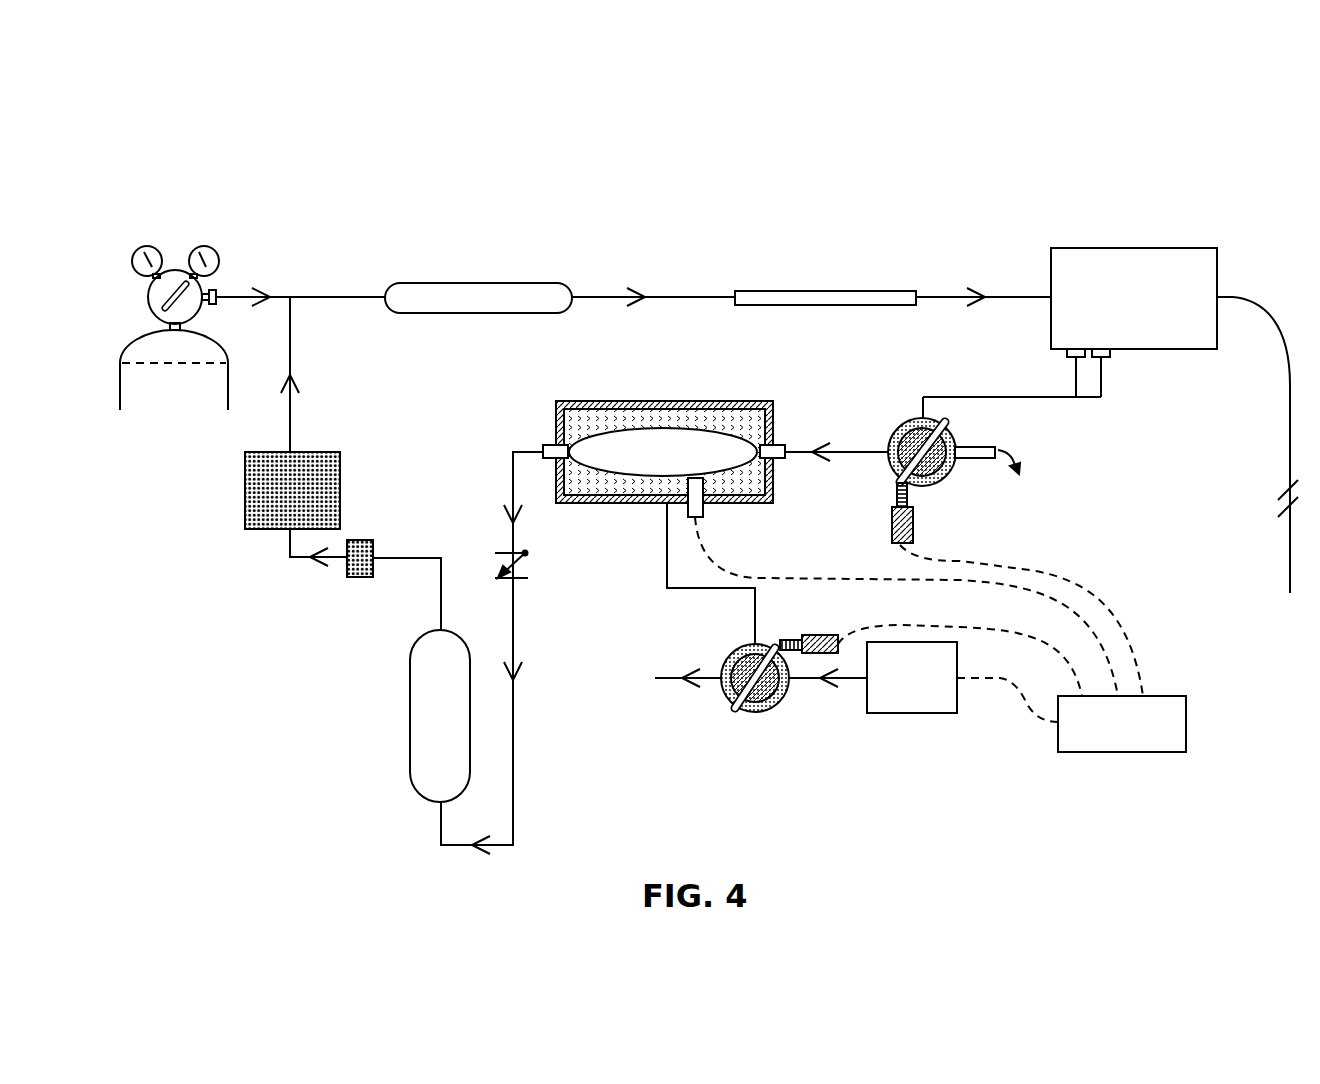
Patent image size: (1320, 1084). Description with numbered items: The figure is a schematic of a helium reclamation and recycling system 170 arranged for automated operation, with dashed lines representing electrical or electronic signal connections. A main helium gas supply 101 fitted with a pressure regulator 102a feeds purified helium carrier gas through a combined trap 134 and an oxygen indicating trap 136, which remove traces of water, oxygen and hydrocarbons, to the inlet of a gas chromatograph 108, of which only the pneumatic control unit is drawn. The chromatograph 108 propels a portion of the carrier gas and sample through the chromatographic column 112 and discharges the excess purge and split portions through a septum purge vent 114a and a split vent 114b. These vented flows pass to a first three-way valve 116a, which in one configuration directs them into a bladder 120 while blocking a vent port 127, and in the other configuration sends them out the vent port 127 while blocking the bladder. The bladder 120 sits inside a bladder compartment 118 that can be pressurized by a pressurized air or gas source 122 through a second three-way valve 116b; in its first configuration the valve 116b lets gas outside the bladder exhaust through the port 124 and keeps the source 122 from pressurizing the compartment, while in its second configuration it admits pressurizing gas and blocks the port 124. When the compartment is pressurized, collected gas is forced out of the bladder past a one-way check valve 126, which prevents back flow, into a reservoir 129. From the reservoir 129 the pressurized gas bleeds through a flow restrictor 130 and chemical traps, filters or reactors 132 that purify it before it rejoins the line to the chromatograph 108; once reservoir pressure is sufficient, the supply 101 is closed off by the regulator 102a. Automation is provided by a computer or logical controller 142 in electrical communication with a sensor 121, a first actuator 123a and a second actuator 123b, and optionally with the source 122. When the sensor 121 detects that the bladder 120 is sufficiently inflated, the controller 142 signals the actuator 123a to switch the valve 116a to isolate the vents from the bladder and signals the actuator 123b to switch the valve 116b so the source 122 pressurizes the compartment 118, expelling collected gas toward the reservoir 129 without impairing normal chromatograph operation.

The helium reclamation and recycling system 170 is at (505, 134).
The main helium gas supply 101 is at (130, 347).
The pressure regulator 102a is at (217, 240).
The combined trap 134 is at (434, 283).
The oxygen indicating trap 136 is at (773, 291).
The gas chromatograph 108 is at (1085, 248).
The septum purge vent 114a is at (1065, 354).
The split vent 114b is at (1112, 353).
The chromatographic column 112 is at (1290, 548).
The chemical traps, filters or reactors 132 is at (245, 478).
The flow restrictor 130 is at (350, 580).
The reservoir 129 is at (410, 665).
The one-way check valve 126 is at (540, 563).
The bladder compartment 118 is at (629, 446).
The bladder 120 is at (641, 467).
The sensor 121 is at (705, 516).
The first 3-way valve 116a is at (953, 473).
The vent port 127 is at (985, 446).
The first actuator 123a is at (913, 513).
The second 3-way valve 116b is at (782, 700).
The second actuator 123b is at (812, 635).
The port 124 is at (670, 678).
The pressurized air or gas source 122 is at (890, 695).
The computer or other logical controller 142 is at (1100, 738).